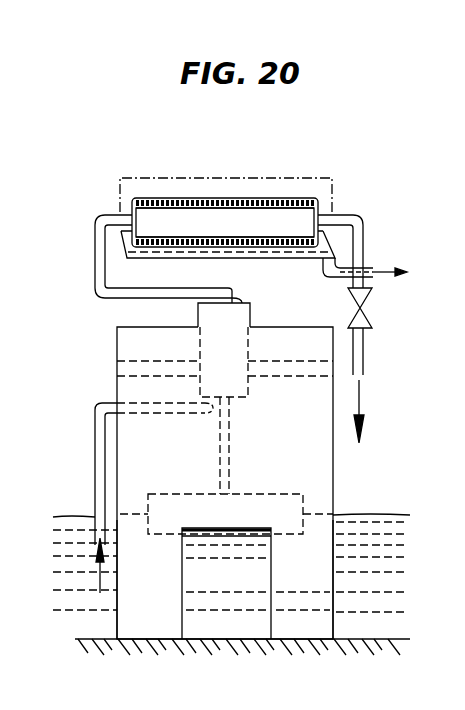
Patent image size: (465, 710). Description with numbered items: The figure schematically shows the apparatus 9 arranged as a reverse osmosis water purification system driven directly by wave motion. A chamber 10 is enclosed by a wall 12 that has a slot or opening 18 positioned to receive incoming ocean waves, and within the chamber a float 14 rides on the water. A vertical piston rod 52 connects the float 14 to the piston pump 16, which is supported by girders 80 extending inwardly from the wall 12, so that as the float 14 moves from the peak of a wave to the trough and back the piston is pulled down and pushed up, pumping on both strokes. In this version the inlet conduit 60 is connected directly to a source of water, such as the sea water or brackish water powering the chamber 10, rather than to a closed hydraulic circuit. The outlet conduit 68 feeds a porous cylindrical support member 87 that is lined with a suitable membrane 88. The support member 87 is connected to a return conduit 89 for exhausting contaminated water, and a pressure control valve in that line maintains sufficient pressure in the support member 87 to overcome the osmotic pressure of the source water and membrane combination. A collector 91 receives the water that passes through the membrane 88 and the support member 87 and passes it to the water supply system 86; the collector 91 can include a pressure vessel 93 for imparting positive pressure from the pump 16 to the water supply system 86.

The apparatus 9 is at (380, 458).
The chamber 10 is at (156, 620).
The enclosing wall 12 is at (117, 350).
The float 14 is at (228, 522).
The piston pump 16 is at (252, 309).
The slot or opening 18 is at (238, 633).
The vertical piston rod 52 is at (229, 425).
The inlet conduit 60 is at (97, 402).
The outlet conduit 68 is at (137, 302).
The girders 80 is at (301, 361).
The water supply system 86 is at (407, 273).
The porous cylindrical support member 87 is at (140, 198).
The membrane 88 is at (228, 232).
The return conduit 89 is at (365, 234).
The collector 91 is at (263, 260).
The pressure vessel 93 is at (247, 177).